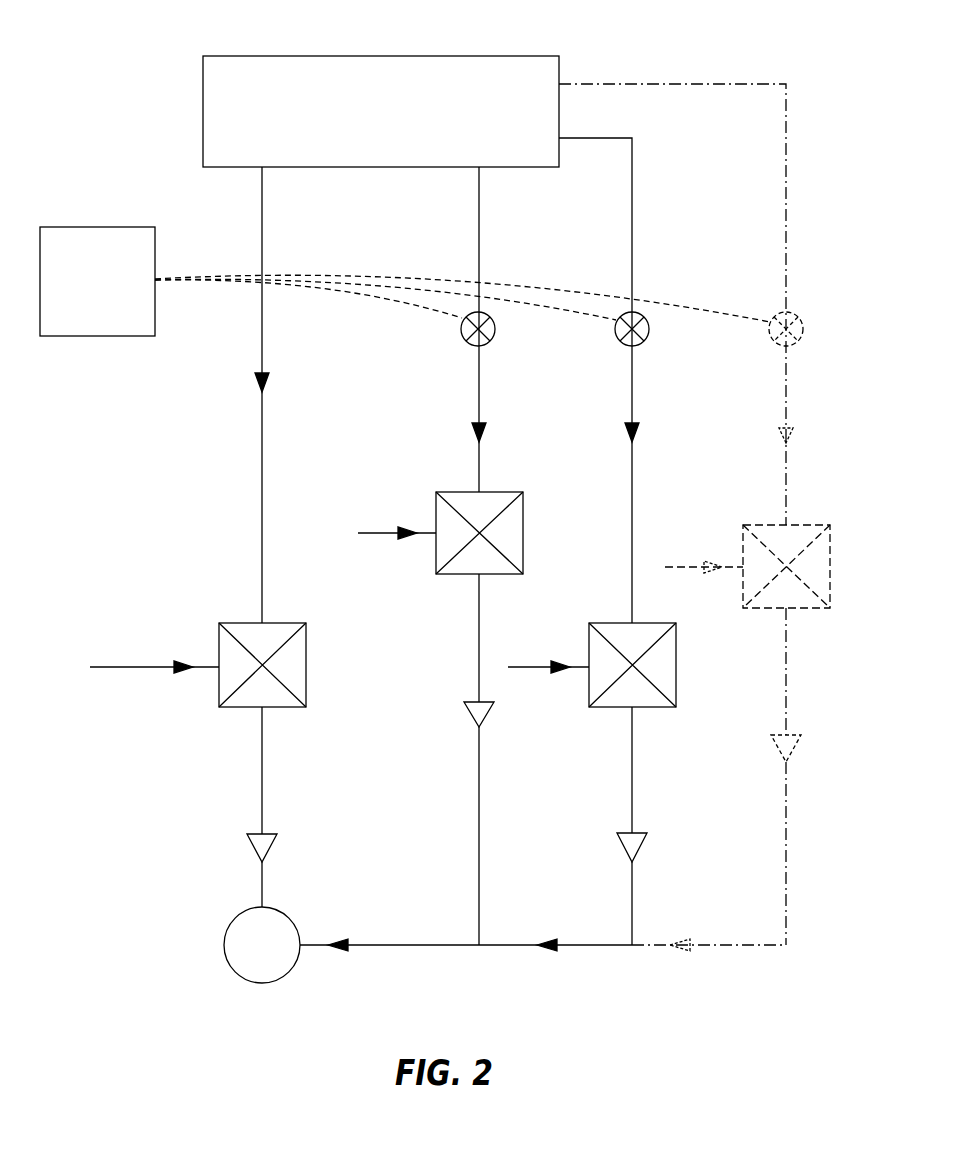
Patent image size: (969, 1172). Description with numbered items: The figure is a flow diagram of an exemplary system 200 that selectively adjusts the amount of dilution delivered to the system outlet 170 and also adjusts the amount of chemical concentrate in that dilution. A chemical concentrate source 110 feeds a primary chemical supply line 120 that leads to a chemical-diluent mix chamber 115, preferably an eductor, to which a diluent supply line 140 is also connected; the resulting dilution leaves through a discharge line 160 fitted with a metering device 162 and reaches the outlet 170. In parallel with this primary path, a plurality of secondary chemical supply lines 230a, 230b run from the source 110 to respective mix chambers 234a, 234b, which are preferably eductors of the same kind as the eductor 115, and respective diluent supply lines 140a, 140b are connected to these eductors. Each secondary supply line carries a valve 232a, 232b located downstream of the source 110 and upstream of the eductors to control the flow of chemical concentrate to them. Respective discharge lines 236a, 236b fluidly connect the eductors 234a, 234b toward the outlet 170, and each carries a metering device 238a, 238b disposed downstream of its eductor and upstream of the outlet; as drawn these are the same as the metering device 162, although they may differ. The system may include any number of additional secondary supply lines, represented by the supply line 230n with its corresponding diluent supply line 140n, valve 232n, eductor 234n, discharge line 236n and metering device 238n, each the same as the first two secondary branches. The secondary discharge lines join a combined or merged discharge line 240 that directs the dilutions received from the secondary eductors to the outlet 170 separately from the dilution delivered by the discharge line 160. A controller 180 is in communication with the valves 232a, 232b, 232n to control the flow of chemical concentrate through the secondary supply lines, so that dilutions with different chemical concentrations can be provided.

The system 200 is at (118, 98).
The chemical concentrate source 110 is at (538, 56).
The primary chemical supply line 120 is at (261, 238).
The controller 180 is at (92, 336).
The secondary chemical supply line 230a is at (478, 238).
The secondary chemical supply line 230b is at (631, 232).
The additional secondary chemical supply line 230n is at (785, 232).
The valve 232a is at (462, 336).
The valve 232b is at (616, 336).
The valve 232n is at (770, 336).
The mix chamber 234a is at (523, 516).
The mix chamber 234b is at (677, 650).
The eductor 234n is at (830, 552).
The diluent supply line 140a is at (387, 530).
The diluent supply line 140b is at (537, 664).
The diluent supply line 140n is at (690, 565).
The diluent supply line 140 is at (145, 664).
The chemical-diluent mix chamber 115 is at (219, 689).
The discharge line 236a is at (478, 632).
The discharge line 236b is at (631, 768).
The discharge line 236n is at (786, 668).
The metering device 238a is at (470, 722).
The metering device 238b is at (622, 845).
The metering device 238n is at (777, 750).
The discharge line 160 is at (261, 780).
The metering device 162 is at (254, 853).
The system outlet 170 is at (226, 935).
The merged discharge line 240 is at (412, 948).